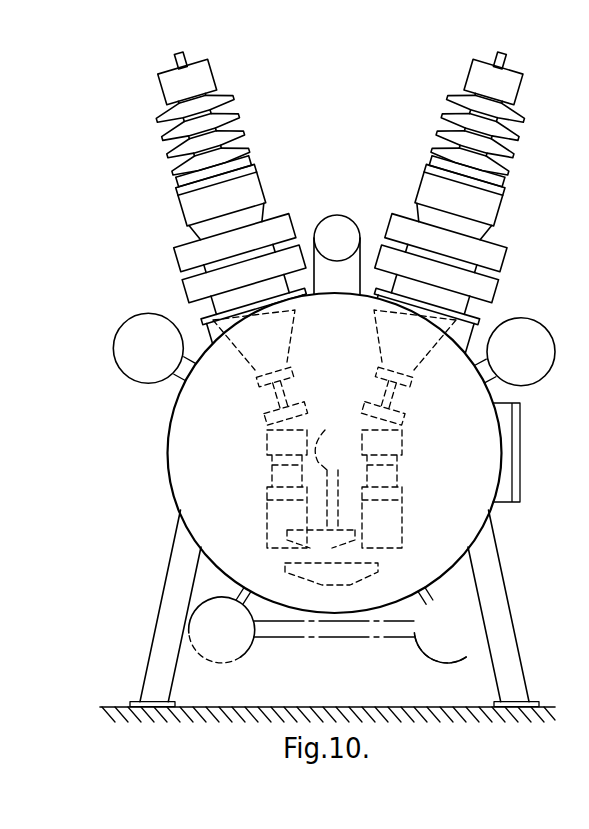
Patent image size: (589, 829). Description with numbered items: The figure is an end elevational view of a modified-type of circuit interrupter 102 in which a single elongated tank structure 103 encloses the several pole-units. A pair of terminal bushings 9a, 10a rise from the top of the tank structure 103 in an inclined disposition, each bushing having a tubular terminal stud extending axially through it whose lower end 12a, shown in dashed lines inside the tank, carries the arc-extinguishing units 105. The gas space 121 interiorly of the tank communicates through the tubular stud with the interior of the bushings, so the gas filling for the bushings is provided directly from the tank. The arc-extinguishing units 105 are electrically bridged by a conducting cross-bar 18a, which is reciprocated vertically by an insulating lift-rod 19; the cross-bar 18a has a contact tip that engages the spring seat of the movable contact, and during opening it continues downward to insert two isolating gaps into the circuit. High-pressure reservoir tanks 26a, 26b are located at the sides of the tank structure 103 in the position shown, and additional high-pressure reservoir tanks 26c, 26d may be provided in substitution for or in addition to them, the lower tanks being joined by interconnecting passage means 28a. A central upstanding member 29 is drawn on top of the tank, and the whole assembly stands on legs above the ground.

The terminal bushing 9a is at (238, 129).
The terminal bushing 10a is at (461, 197).
The central operating cylinder 29 is at (340, 217).
The high-pressure reservoir tank 26a is at (525, 319).
The high-pressure reservoir tank 26b is at (158, 313).
The additional high-pressure reservoir tank 26c is at (233, 660).
The additional high-pressure reservoir tank 26d is at (435, 662).
The interconnecting passage means 28a is at (343, 638).
The gas space 121 is at (232, 449).
The single elongated tank structure 103 is at (497, 401).
The circuit interrupter 102 is at (395, 97).
The lower end of terminal stud 12a is at (297, 393).
The arc-extinguishing unit 105 is at (267, 498).
The insulating lift-rod 19 is at (320, 450).
The conducting cross-bar 18a is at (378, 566).